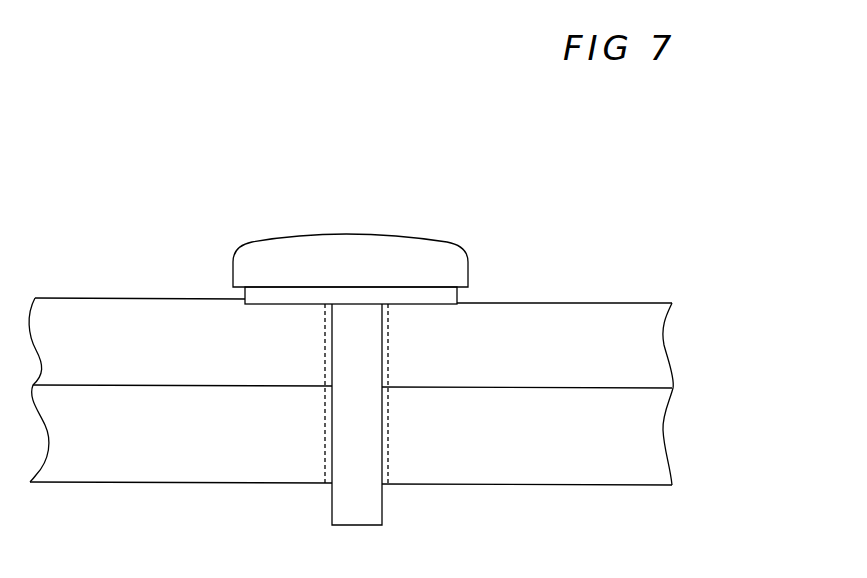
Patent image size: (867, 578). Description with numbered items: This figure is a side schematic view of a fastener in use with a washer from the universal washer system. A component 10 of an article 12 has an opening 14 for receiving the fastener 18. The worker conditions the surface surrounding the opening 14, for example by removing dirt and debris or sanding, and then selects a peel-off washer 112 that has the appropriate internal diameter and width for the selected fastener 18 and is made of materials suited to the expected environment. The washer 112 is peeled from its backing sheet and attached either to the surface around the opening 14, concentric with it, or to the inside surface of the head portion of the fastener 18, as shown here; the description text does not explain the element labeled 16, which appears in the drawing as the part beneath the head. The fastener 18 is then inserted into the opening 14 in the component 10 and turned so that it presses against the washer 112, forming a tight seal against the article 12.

The component 10 is at (392, 391).
The article 12 is at (422, 391).
The opening 14 is at (389, 345).
The washer 16 is at (415, 269).
The fastener 18 is at (394, 227).
The peel-off washer 112 is at (248, 298).